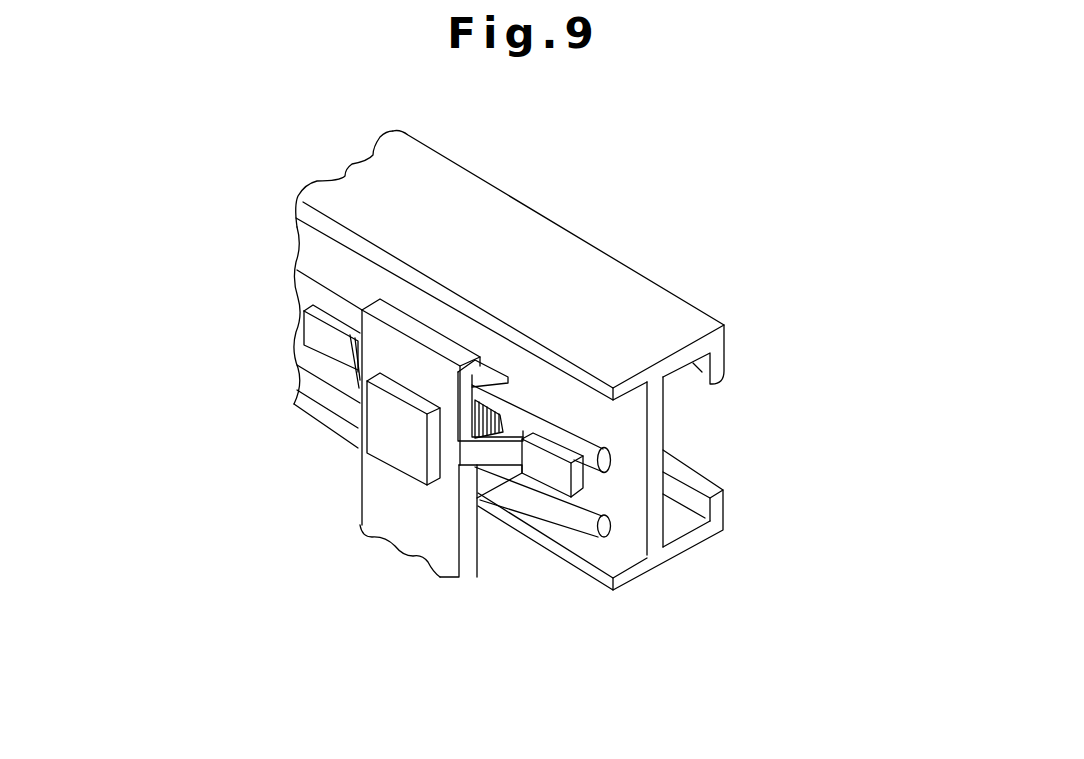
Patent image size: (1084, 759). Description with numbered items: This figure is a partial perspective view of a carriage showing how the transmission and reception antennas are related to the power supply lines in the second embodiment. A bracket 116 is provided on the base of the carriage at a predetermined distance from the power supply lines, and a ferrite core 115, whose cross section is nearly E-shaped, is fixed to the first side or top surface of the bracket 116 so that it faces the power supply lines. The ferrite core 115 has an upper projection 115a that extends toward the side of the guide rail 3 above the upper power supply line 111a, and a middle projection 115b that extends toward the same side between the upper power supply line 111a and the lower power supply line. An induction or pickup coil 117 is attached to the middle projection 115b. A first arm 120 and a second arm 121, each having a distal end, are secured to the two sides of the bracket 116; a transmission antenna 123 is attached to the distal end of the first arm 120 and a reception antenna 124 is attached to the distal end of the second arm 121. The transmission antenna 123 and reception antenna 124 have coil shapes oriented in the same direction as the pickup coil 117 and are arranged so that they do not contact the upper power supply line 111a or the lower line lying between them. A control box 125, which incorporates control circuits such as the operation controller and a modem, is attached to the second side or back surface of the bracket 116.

The guide rail 3 is at (667, 303).
The upper power supply line 111a is at (609, 458).
The ferrite core 115 is at (423, 321).
The upper projection 115a is at (490, 363).
The middle projection 115b is at (507, 410).
The bracket 116 is at (440, 577).
The pickup coil 117 is at (493, 407).
The first arm 120 is at (357, 372).
The second arm 121 is at (468, 461).
The transmission antenna 123 is at (304, 327).
The reception antenna 124 is at (584, 486).
The control box 125 is at (386, 455).